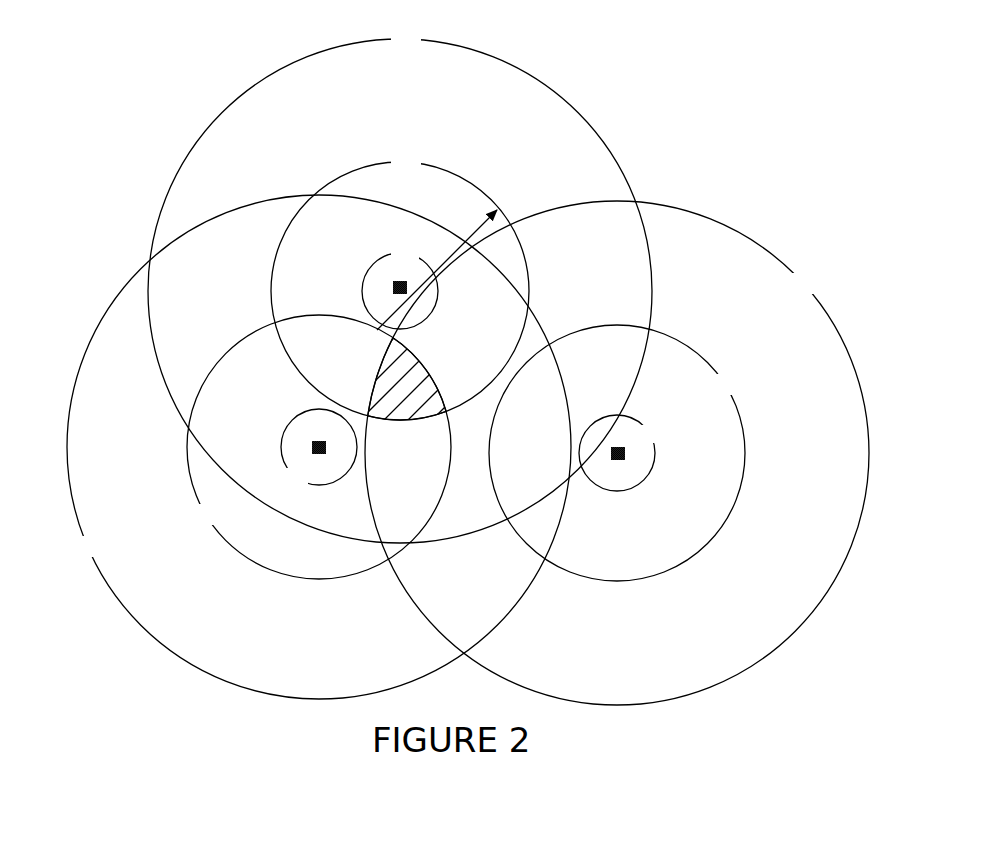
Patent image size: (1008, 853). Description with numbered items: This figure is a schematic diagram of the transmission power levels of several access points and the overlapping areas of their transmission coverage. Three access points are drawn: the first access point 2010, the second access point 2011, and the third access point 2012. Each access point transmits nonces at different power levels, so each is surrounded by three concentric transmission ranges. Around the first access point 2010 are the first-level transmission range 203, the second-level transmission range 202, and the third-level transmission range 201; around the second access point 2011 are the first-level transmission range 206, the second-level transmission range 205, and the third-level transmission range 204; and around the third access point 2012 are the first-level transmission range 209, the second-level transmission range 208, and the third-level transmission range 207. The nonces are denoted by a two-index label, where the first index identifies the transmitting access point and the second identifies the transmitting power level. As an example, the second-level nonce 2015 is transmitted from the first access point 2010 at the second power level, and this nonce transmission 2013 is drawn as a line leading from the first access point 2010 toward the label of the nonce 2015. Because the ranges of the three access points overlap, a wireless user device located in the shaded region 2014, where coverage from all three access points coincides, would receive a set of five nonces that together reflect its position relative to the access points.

The C3 transmission range 201 is at (400, 278).
The C2 transmission range 202 is at (400, 279).
The C1 transmission range 203 is at (383, 277).
The C3 transmission range 204 is at (295, 447).
The C2 transmission range 205 is at (319, 458).
The C1 transmission range 206 is at (326, 463).
The C3 transmission range 207 is at (637, 453).
The C2 transmission range 208 is at (637, 453).
The C1 transmission range 209 is at (623, 435).
The access point AP1 2010 is at (361, 293).
The access point AP2 2011 is at (285, 431).
The access point AP3 2012 is at (650, 478).
The nonce transmission from AP1 2013 is at (438, 270).
The shaded region 2014 is at (412, 392).
The N12 nonce 2015 is at (434, 207).